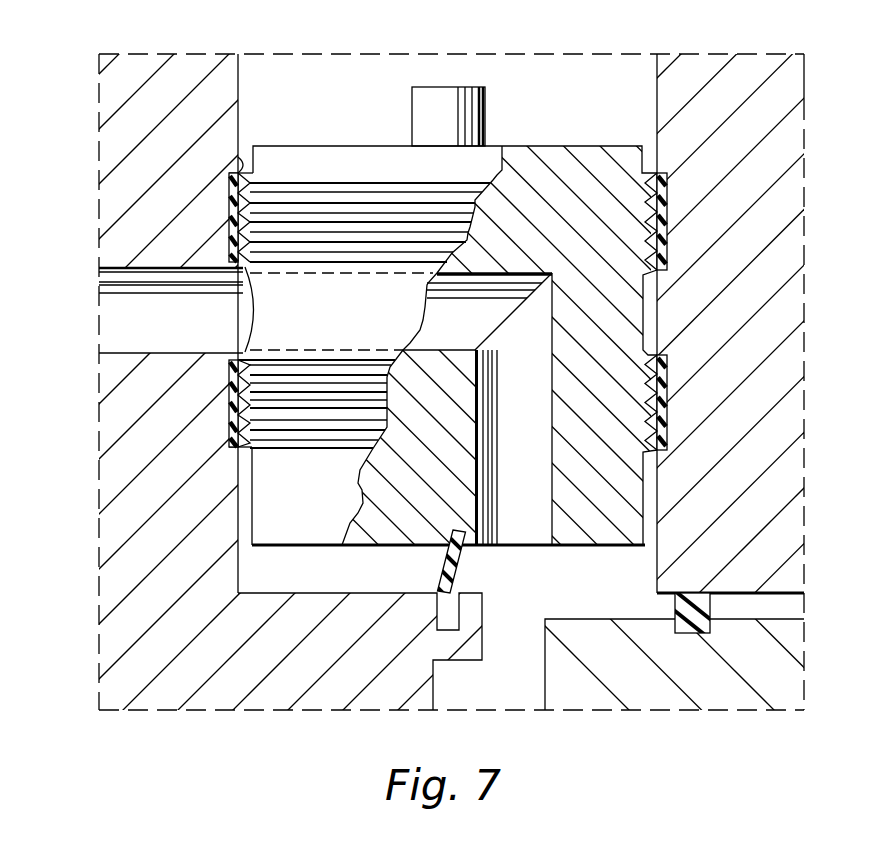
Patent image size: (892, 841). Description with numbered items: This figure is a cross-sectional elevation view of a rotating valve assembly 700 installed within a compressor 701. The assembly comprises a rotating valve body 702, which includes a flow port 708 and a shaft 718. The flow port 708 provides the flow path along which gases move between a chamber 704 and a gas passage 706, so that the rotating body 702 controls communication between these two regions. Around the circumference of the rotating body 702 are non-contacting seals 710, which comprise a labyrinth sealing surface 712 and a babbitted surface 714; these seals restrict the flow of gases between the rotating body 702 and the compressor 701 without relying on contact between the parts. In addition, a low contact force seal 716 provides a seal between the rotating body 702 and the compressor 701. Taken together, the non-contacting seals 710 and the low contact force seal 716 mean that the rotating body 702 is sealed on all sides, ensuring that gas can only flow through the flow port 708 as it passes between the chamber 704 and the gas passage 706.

The rotating valve assembly 700 is at (714, 29).
The compressor 701 is at (665, 567).
The rotating valve body 702 is at (580, 146).
The chamber 704 is at (571, 607).
The gas passage 706 is at (118, 320).
The flow port 708 is at (523, 540).
The non-contacting seals 710 is at (667, 218).
The labyrinth sealing surface 712 is at (237, 203).
The babbitted surface 714 is at (237, 158).
The low contact force seal 716 is at (440, 568).
The shaft 718 is at (412, 107).